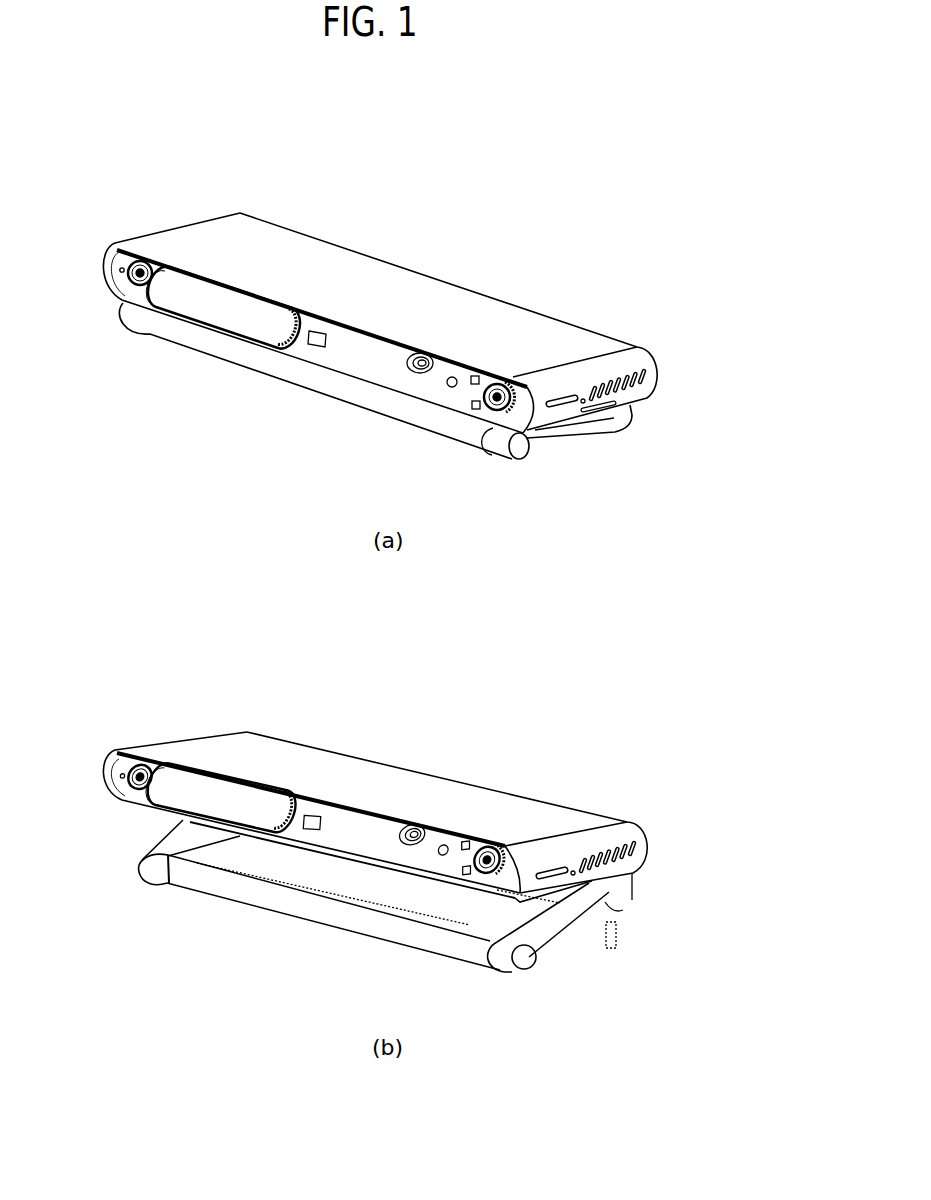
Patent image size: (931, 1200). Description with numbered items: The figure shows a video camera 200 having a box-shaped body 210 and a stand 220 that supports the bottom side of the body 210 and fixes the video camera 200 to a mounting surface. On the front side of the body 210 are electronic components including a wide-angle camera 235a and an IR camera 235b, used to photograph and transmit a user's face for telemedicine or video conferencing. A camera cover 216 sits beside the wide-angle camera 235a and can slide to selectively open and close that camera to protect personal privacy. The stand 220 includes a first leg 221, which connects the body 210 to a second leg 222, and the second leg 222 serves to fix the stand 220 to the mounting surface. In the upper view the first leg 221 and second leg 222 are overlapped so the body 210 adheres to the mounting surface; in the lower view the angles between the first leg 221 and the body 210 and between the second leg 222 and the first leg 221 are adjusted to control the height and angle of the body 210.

The video camera 200 is at (243, 121).
The body 210 is at (593, 330).
The camera cover 216 is at (263, 316).
The wide-angle camera 235a is at (143, 258).
The IR camera 235b is at (504, 382).
The stand 220 is at (550, 443).
The first leg 221 is at (623, 908).
The second leg 222 is at (600, 948).